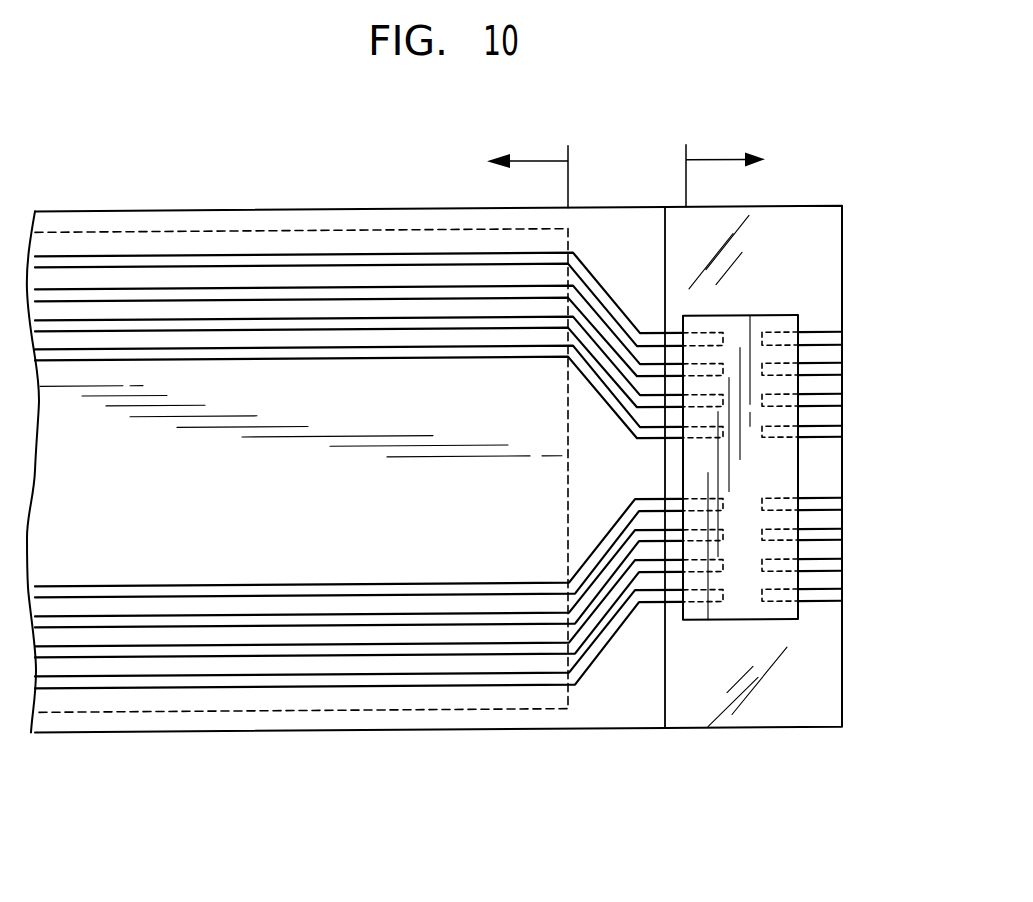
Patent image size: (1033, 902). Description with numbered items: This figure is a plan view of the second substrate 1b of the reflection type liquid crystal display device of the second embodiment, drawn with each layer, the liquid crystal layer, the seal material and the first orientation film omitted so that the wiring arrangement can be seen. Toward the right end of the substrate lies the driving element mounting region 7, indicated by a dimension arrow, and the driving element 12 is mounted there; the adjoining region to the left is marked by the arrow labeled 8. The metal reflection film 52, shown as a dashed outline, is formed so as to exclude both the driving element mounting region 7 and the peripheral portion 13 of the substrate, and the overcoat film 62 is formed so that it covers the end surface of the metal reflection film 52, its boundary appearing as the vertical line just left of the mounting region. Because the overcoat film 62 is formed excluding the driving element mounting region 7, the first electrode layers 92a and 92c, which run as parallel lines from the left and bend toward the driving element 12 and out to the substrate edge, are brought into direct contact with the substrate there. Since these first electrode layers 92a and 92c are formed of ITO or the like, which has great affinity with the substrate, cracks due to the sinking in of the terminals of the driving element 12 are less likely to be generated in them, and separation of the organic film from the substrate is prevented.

The second substrate 1b is at (818, 693).
The driving element mounting region 7 is at (714, 158).
The flexible wiring region 8 is at (533, 158).
The driving element 12 is at (752, 297).
The peripheral portion 13 is at (287, 719).
The metal reflection film 52 is at (148, 709).
The overcoat film 62 is at (645, 710).
The first electrode layer 92a is at (608, 302).
The first electrode layer 92c is at (835, 433).